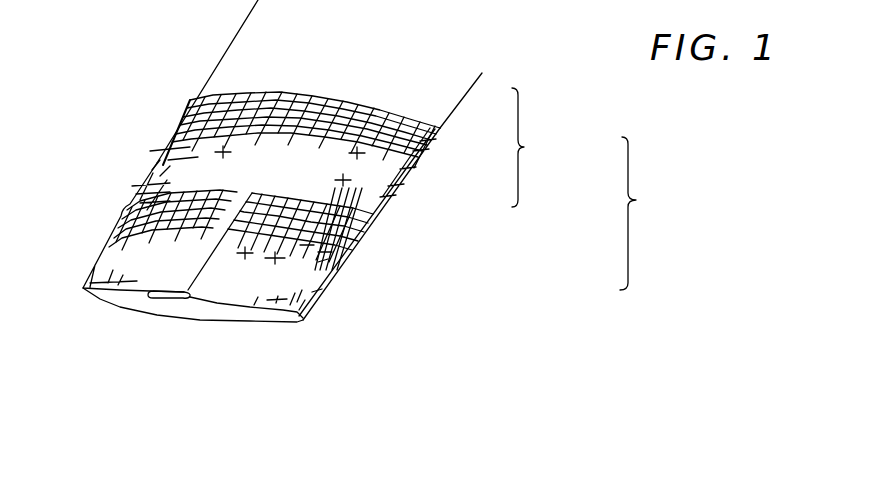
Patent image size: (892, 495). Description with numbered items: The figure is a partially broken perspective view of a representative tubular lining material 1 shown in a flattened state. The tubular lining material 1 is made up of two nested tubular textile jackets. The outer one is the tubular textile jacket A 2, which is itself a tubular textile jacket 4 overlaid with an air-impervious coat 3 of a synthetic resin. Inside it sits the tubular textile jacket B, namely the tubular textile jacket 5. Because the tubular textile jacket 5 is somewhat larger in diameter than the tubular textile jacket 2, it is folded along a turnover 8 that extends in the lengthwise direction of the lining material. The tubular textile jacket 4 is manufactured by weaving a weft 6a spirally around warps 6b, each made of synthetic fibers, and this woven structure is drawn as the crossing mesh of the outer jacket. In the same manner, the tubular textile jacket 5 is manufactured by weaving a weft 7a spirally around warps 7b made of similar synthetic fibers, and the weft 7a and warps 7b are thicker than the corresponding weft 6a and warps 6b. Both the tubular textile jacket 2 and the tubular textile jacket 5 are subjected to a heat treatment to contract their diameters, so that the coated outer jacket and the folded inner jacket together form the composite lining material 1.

The tubular lining material 1 is at (643, 213).
The tubular textile jacket A 2 is at (550, 147).
The air-impervious coat 3 is at (460, 83).
The tubular textile jacket 4 is at (397, 192).
The tubular textile jacket 5 is at (323, 283).
The weft 6a is at (185, 114).
The warps 6b is at (164, 150).
The weft 7a is at (122, 231).
The warps 7b is at (103, 261).
The turnover 8 is at (196, 278).